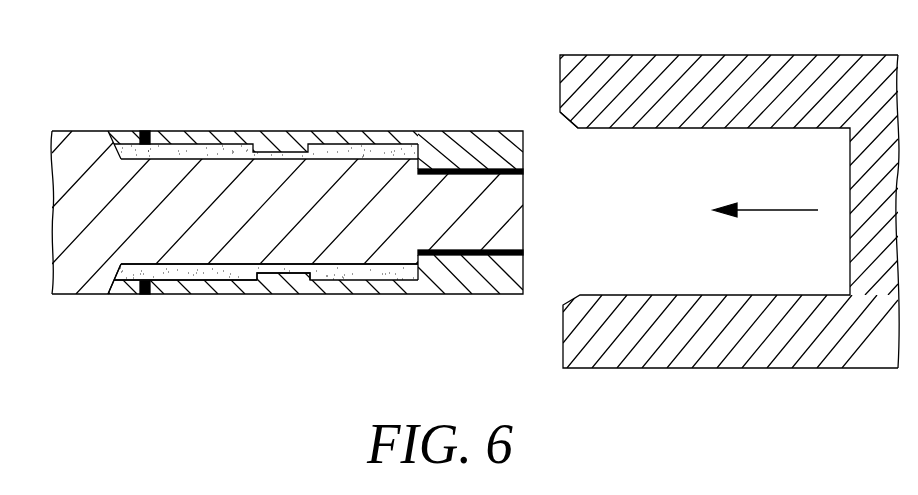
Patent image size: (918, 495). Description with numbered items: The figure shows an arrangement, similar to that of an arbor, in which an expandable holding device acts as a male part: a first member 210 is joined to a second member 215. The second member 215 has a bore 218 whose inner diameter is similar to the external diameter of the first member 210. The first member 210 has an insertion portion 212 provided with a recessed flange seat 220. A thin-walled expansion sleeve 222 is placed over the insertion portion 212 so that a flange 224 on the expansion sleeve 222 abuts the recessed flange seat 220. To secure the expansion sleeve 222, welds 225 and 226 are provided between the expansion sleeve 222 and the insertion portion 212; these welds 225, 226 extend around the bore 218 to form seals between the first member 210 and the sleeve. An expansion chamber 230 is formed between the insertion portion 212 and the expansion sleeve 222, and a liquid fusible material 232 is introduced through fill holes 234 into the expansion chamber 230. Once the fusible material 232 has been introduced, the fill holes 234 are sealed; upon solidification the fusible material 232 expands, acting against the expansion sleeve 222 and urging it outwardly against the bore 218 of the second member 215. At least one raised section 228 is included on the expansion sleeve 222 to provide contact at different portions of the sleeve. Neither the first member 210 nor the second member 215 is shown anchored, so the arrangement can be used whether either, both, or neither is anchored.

The first member 210 is at (317, 213).
The insertion portion 212 is at (347, 187).
The second member 215 is at (704, 189).
The bore 218 is at (610, 178).
The recessed flange seat 220 is at (418, 162).
The expansion sleeve 222 is at (282, 277).
The flange 224 is at (475, 135).
The weld 225 is at (523, 251).
The weld 226 is at (143, 131).
The raised section 228 is at (282, 150).
The expansion chamber 230 is at (352, 266).
The fusible material 232 is at (387, 292).
The fill holes 234 is at (114, 281).